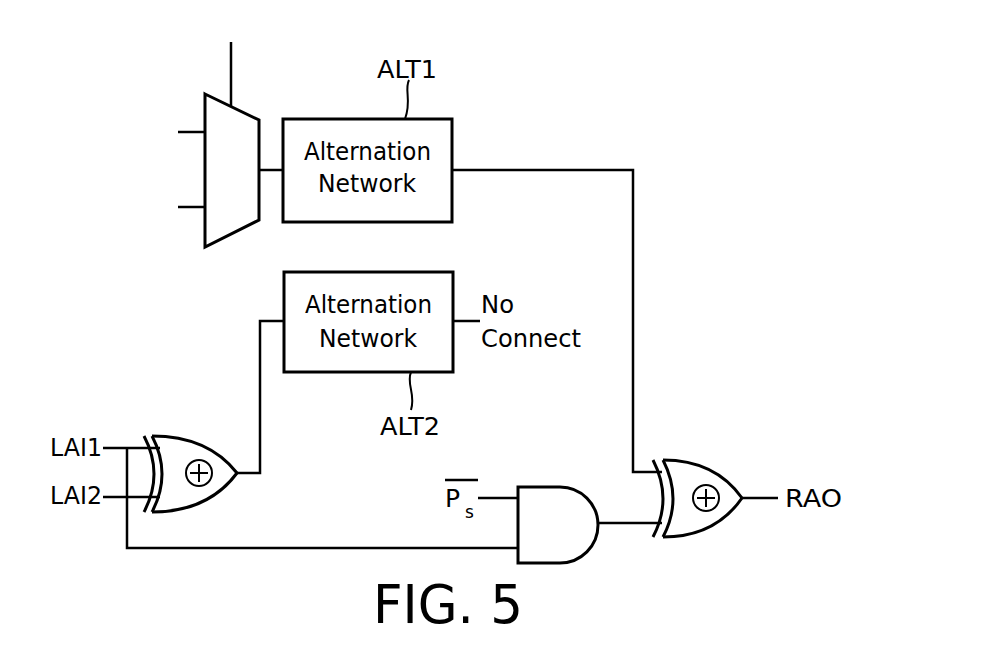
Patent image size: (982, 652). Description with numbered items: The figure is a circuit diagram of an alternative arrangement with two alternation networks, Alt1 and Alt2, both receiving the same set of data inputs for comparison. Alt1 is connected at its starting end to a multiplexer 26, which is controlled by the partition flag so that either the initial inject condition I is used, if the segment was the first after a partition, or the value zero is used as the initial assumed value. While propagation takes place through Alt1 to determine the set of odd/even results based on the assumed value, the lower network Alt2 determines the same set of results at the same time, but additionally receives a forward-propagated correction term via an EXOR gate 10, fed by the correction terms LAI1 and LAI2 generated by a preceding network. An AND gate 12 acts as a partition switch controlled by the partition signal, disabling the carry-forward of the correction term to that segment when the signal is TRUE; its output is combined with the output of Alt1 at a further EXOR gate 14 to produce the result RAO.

The EXOR gate 10 is at (190, 436).
The AND gate 12 is at (545, 487).
The exclusive-OR gate 14 is at (698, 460).
The multiplexer 26 is at (232, 247).